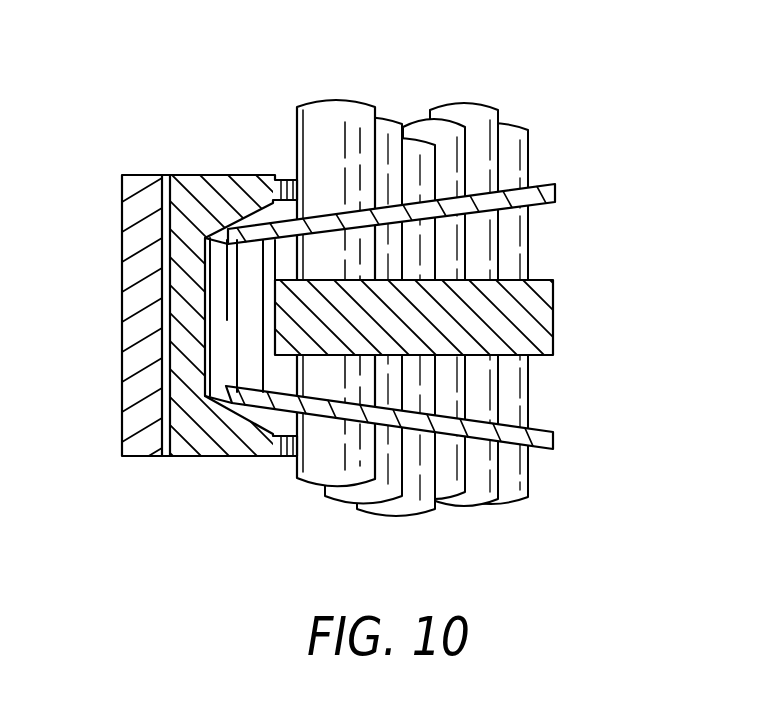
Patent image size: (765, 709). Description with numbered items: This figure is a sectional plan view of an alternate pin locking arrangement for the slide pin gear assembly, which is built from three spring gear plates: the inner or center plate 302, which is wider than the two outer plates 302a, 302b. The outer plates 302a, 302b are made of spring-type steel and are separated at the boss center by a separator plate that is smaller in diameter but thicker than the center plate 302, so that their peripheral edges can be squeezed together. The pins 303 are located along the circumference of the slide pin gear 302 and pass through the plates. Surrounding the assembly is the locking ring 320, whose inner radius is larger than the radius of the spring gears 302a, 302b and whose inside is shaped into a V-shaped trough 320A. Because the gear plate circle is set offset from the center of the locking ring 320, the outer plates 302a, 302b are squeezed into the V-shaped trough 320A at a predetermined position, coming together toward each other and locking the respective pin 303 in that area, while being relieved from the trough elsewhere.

The pin 303 is at (326, 124).
The locking ring 320 is at (216, 457).
The V-shaped trough 320A is at (246, 303).
The center plate 302 is at (545, 317).
The outer plate 302a is at (549, 204).
The outer plate 302b is at (553, 436).